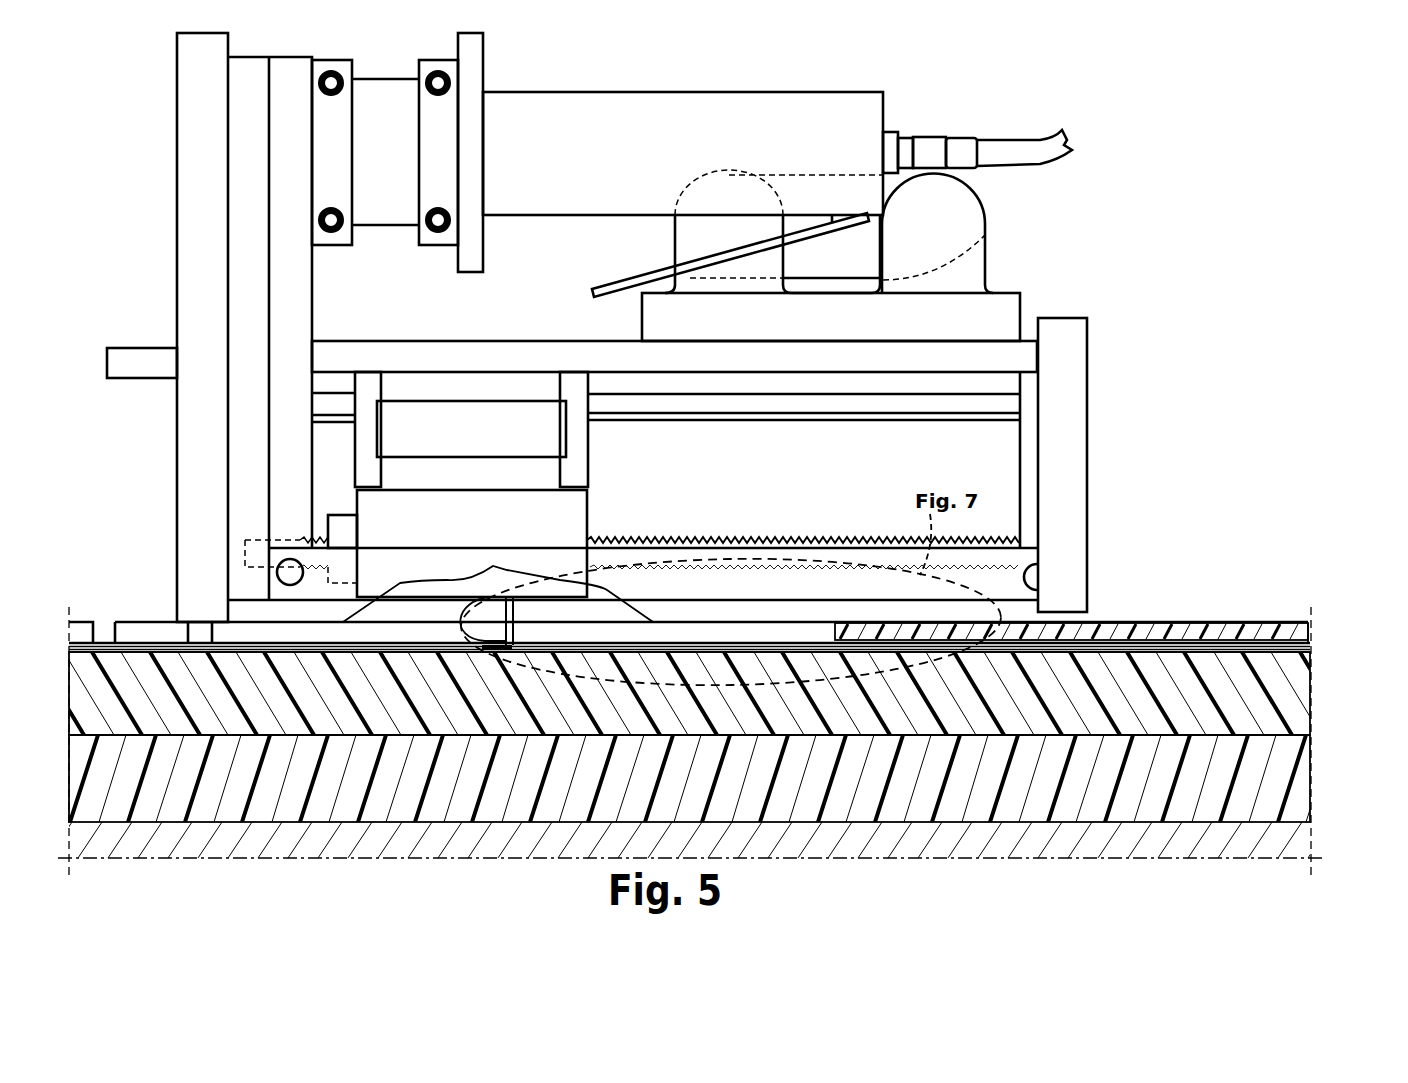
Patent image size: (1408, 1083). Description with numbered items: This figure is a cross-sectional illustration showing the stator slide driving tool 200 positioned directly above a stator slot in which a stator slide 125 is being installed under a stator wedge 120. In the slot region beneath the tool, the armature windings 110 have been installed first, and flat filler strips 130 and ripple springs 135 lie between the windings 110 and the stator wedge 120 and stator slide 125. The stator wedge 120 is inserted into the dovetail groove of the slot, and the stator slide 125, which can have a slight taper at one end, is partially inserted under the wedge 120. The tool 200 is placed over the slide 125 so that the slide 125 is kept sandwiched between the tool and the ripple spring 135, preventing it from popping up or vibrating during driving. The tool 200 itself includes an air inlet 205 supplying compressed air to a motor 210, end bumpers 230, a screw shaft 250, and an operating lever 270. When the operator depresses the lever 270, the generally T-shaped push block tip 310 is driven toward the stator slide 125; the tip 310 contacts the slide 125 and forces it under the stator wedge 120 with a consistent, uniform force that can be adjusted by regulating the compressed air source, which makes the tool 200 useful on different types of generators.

The armature windings 110 is at (1300, 727).
The stator wedge 120 is at (1162, 627).
The stator slide 125 is at (1312, 643).
The filler strips 130 is at (1297, 712).
The ripple springs 135 is at (1312, 648).
The stator slide driving tool 200 is at (1127, 315).
The air inlet 205 is at (928, 148).
The motor 210 is at (657, 115).
The end bumpers 230 is at (1073, 484).
The screw shaft 250 is at (778, 538).
The operating lever 270 is at (647, 280).
The push block tip 310 is at (522, 627).